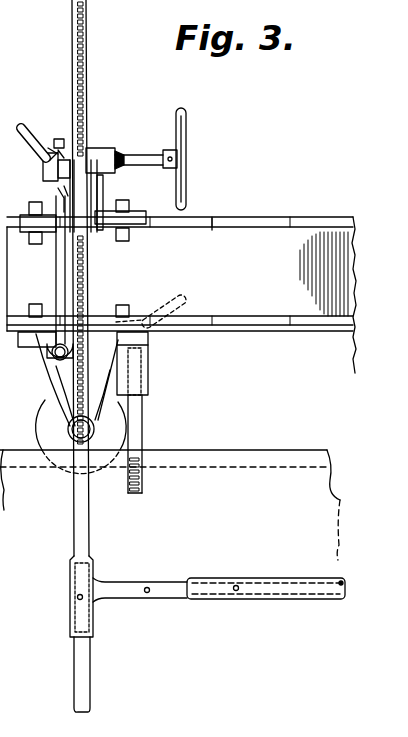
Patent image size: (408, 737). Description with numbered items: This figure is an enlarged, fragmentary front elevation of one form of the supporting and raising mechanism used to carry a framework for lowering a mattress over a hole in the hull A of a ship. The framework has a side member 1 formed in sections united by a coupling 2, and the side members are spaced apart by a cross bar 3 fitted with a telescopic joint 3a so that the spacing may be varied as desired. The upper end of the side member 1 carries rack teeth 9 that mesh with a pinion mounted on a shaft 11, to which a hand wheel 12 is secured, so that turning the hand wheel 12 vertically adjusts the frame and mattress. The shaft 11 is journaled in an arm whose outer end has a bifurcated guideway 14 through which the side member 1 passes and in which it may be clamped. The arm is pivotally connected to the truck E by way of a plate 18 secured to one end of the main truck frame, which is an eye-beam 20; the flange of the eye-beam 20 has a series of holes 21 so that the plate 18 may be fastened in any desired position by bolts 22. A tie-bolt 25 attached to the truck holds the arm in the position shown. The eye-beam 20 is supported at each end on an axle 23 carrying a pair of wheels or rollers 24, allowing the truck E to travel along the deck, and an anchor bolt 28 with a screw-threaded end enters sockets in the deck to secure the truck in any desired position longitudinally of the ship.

The side member 1 is at (89, 276).
The coupling 2 is at (93, 566).
The cross bar 3 is at (240, 578).
The telescopic joint 3a is at (187, 580).
The rack teeth 9 is at (82, 304).
The shaft 11 is at (130, 150).
The hand wheel 12 is at (177, 118).
The bifurcated guideway 14 is at (80, 191).
The plate 18 is at (138, 212).
The eye-beam 20 is at (181, 295).
The holes 21 is at (303, 220).
The bolts 22 is at (40, 234).
The axle 23 is at (52, 386).
The wheels or rollers 24 is at (44, 432).
The tie-bolt 25 is at (56, 286).
The anchor bolt 28 is at (143, 416).
The hull A is at (240, 458).
The truck E is at (149, 363).